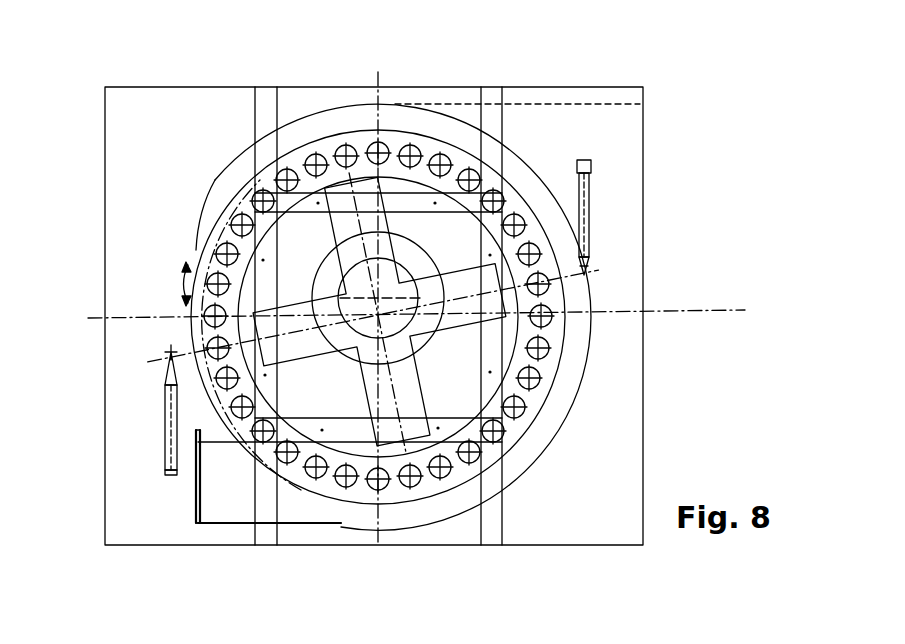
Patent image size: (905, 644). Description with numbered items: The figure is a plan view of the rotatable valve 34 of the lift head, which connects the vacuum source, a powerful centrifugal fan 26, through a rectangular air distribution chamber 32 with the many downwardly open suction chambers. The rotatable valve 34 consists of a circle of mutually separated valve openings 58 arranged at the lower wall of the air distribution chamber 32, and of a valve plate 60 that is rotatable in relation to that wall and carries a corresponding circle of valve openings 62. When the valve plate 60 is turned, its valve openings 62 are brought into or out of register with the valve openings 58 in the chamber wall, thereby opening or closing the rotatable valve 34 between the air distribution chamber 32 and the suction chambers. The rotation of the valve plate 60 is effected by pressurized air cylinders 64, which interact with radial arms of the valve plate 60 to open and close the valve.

The centrifugal fan 26 is at (527, 470).
The air distribution chamber 32 is at (617, 425).
The rotatable valve 34 is at (556, 292).
The valve openings 58 is at (437, 152).
The valve plate 60 is at (187, 332).
The valve openings 62 is at (289, 168).
The pressurized air cylinders 64 is at (590, 200).